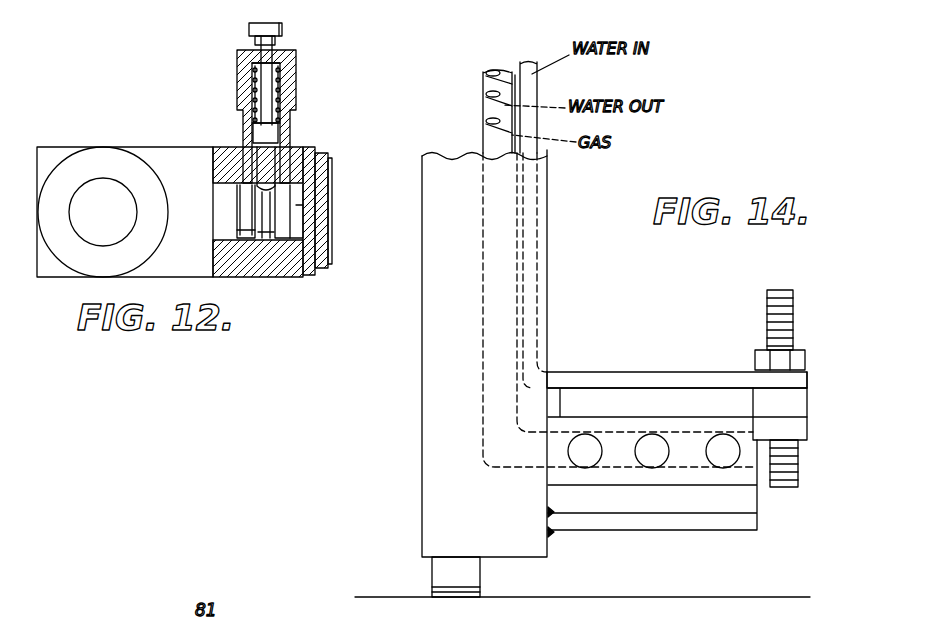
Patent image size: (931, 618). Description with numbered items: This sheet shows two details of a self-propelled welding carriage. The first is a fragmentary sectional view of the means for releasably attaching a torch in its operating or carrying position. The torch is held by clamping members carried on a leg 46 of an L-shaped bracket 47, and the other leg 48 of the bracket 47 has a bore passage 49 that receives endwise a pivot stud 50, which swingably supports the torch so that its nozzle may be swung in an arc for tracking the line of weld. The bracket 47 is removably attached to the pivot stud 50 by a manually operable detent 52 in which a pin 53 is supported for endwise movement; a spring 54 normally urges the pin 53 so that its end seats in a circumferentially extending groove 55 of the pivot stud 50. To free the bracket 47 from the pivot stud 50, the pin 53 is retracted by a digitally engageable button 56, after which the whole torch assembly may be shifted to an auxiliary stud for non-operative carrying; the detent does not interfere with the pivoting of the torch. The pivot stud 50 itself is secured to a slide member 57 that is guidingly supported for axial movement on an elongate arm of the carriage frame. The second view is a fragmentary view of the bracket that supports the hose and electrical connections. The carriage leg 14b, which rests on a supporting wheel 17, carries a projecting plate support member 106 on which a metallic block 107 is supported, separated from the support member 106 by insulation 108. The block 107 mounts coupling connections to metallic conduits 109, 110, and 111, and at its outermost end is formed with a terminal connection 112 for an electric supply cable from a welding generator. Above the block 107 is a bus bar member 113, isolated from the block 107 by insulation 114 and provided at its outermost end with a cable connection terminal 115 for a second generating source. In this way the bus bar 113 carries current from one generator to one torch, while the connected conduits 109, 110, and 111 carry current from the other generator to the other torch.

In FIG. 12, the leg 46 is at (57, 147).
In FIG. 12, the L-shaped bracket 47 is at (173, 145).
In FIG. 12, the other leg of the bracket 48 is at (292, 270).
In FIG. 12, the bore passage 49 is at (215, 238).
In FIG. 12, the pivot stud 50 is at (287, 193).
In FIG. 12, the manually operable detent 52 is at (300, 67).
In FIG. 12, the pin 53 is at (268, 145).
In FIG. 12, the spring 54 is at (244, 110).
In FIG. 12, the circumferentially extending groove 55 is at (268, 243).
In FIG. 12, the digitally engageable button 56 is at (284, 27).
In FIG. 12, the slide member 57 is at (307, 268).
In FIG. 14, the leg 14b is at (549, 196).
In FIG. 14, the supporting wheel 17 is at (444, 568).
In FIG. 14, the plate support member 106 is at (745, 523).
In FIG. 14, the metallic block 107 is at (778, 425).
In FIG. 14, the insulation 108 is at (678, 505).
In FIG. 14, the metallic conduit 109 is at (496, 138).
In FIG. 14, the metallic conduit 110 is at (507, 104).
In FIG. 14, the metallic conduit 111 is at (500, 79).
In FIG. 14, the terminal connection 112 is at (783, 483).
In FIG. 14, the bus bar member 113 is at (529, 87).
In FIG. 14, the insulation 114 is at (679, 391).
In FIG. 14, the cable connection terminal 115 is at (790, 296).